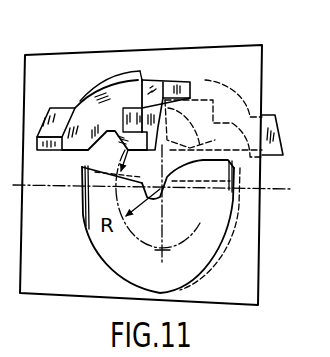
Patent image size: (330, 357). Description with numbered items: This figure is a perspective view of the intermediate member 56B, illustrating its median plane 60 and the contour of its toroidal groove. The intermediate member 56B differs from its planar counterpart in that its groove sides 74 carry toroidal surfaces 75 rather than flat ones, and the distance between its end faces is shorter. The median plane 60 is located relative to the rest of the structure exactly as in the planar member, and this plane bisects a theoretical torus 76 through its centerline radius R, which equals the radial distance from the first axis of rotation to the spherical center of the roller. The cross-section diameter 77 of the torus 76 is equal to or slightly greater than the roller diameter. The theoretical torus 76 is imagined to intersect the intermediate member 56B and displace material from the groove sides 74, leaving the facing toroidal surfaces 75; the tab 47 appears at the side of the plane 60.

The intermediate member 56B is at (103, 92).
The groove sides 74 is at (140, 78).
The toroidal surfaces 75 is at (199, 127).
The tab 47 is at (273, 190).
The theoretical torus 76 is at (208, 225).
The cross-section diameter 77 is at (84, 166).
The median plane 60 is at (260, 268).